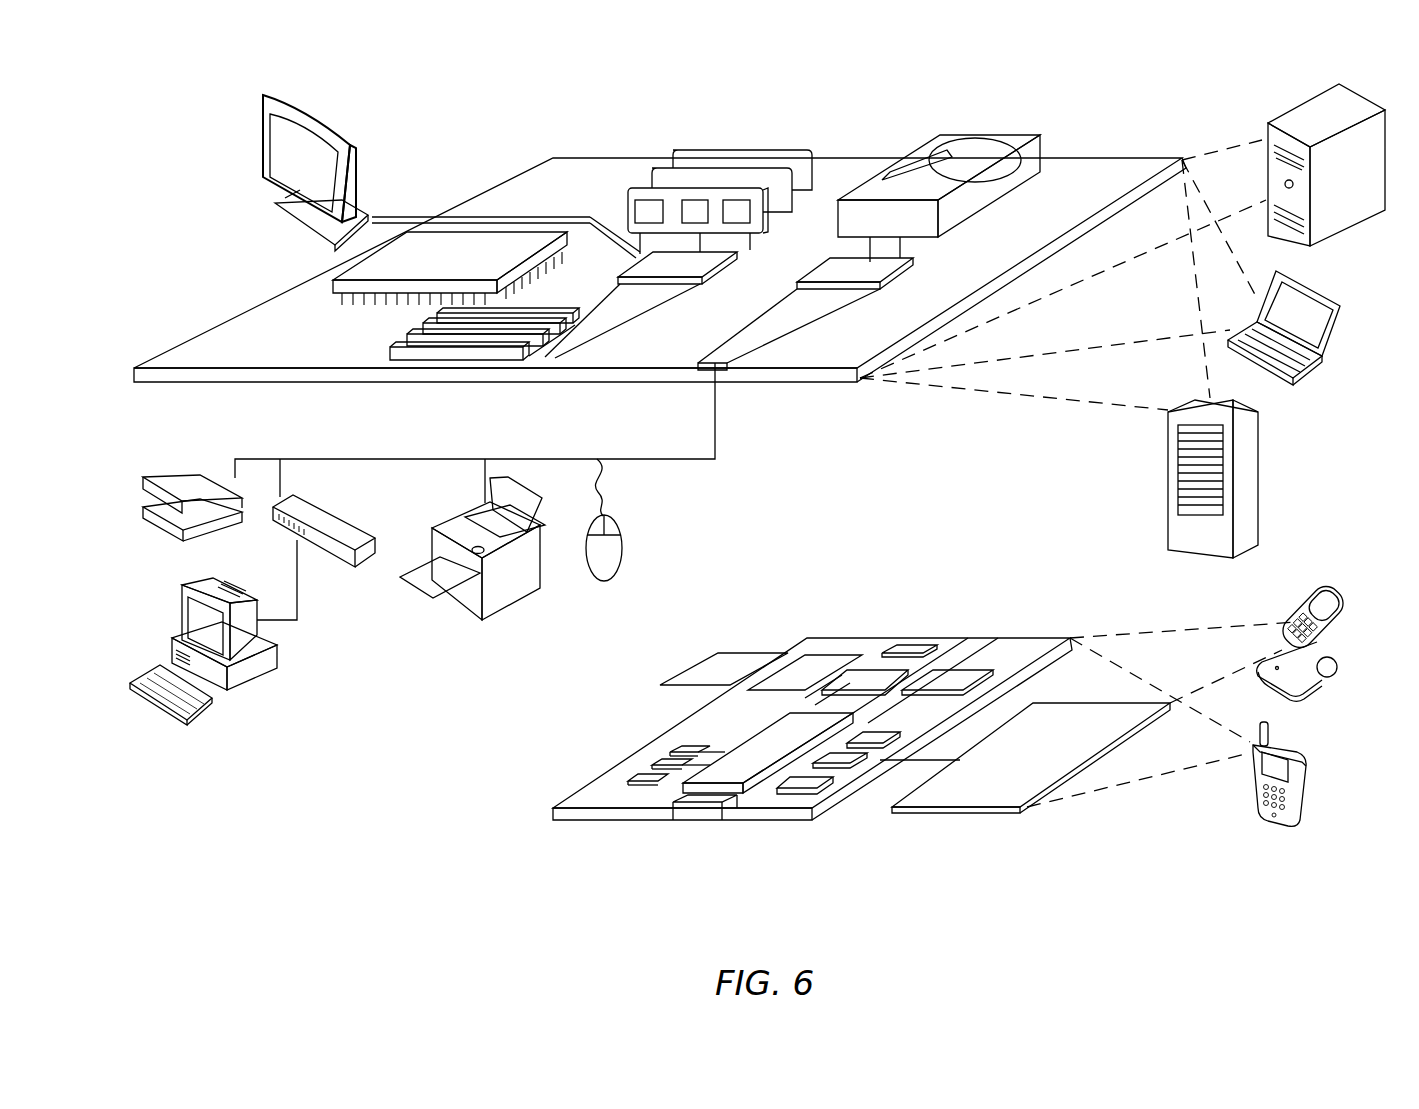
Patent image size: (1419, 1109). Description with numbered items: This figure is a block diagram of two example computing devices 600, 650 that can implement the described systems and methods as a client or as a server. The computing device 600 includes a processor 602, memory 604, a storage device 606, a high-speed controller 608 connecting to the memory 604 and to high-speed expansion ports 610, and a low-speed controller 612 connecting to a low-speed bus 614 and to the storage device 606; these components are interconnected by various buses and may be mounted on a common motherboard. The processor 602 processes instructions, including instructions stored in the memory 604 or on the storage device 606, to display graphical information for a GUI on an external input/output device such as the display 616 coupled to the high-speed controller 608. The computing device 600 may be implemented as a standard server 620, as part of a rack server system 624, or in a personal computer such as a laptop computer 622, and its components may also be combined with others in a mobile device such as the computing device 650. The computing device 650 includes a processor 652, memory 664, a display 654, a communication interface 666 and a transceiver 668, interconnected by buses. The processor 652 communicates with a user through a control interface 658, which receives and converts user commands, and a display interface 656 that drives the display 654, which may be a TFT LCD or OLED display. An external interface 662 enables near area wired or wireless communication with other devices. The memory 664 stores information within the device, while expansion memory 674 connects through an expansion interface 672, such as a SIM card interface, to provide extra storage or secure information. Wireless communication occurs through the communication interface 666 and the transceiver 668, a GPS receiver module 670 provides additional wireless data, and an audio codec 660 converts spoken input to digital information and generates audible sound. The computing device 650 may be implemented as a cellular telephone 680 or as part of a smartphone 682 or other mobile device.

The computing device 600 is at (170, 115).
The processor 602 is at (330, 283).
The memory 604 is at (693, 160).
The storage device 606 is at (935, 140).
The high-speed controller 608 is at (640, 262).
The high-speed expansion ports 610 is at (403, 340).
The low-speed controller 612 is at (835, 265).
The low-speed bus 614 is at (722, 382).
The display 616 is at (266, 97).
The standard server 620 is at (1262, 138).
The laptop computer 622 is at (1318, 292).
The rack server system 624 is at (1170, 498).
The computing device 650 is at (523, 823).
The processor 652 is at (740, 790).
The display 654 is at (990, 795).
The display interface 656 is at (812, 792).
The control interface 658 is at (870, 742).
The audio codec 660 is at (842, 762).
The external interface 662 is at (702, 808).
The memory 664 is at (655, 762).
The communication interface 666 is at (862, 680).
The transceiver 668 is at (946, 680).
The GPS receiver module 670 is at (908, 645).
The expansion interface 672 is at (795, 655).
The expansion memory 674 is at (735, 653).
The cellular telephone 680 is at (1305, 592).
The smartphone 682 is at (1253, 778).